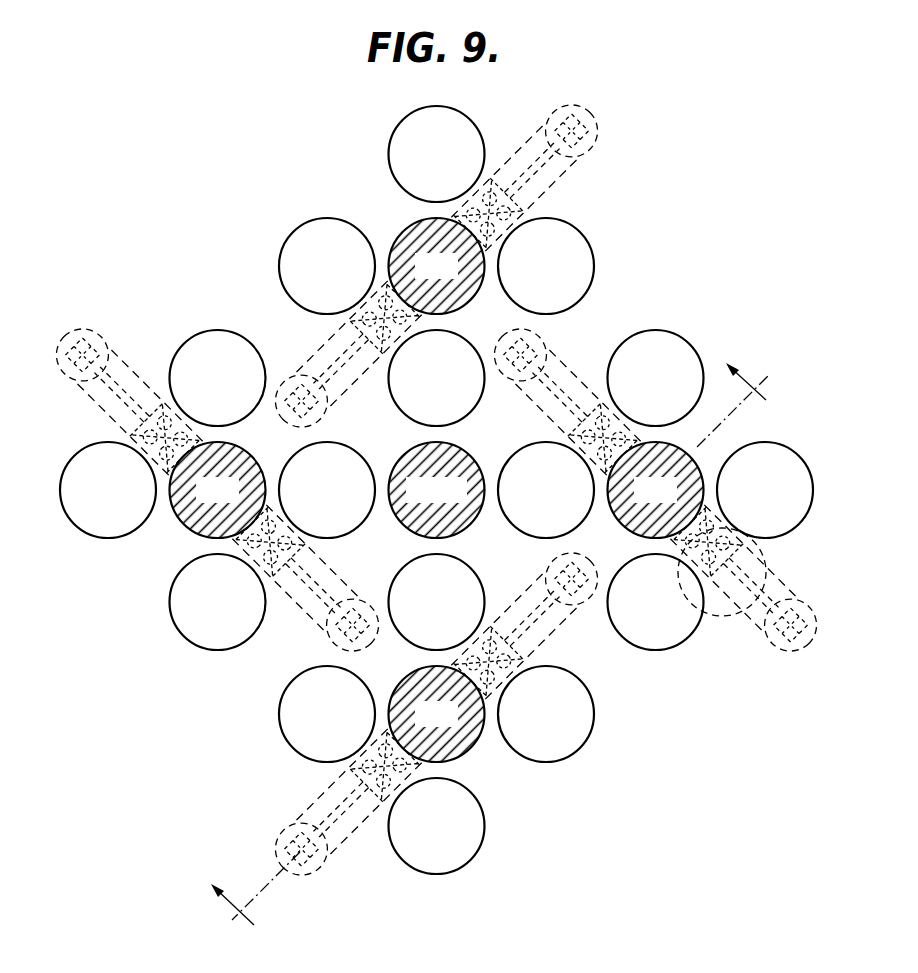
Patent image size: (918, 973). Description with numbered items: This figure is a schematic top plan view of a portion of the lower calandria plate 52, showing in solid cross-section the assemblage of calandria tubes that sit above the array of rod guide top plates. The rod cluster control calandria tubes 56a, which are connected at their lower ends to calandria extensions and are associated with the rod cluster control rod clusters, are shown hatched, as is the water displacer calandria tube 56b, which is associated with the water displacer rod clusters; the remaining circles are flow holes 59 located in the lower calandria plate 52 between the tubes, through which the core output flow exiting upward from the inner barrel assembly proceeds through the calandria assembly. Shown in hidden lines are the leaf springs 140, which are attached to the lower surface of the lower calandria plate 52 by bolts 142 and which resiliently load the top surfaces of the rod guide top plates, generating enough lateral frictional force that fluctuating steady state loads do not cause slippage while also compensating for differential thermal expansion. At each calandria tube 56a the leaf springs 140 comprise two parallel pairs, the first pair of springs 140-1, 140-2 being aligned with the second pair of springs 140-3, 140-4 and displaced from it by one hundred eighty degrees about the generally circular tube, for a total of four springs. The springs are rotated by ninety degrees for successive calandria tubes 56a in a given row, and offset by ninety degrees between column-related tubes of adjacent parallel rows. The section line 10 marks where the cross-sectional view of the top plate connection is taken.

The section line 10- 10 is at (476, 627).
The lower calandria plate 52 is at (173, 736).
The RCC calandria tube 56a is at (184, 524).
The WDRC calandria tube 56b is at (404, 458).
The flow hole 59 is at (449, 393).
The leaf spring 140 is at (806, 668).
The first leaf spring of first pair 140-1 is at (744, 608).
The second leaf spring of first pair 140-2 is at (787, 598).
The first leaf spring of second pair 140-3 is at (557, 419).
The second leaf spring of second pair 140-4 is at (592, 396).
The bolt 142 is at (731, 524).